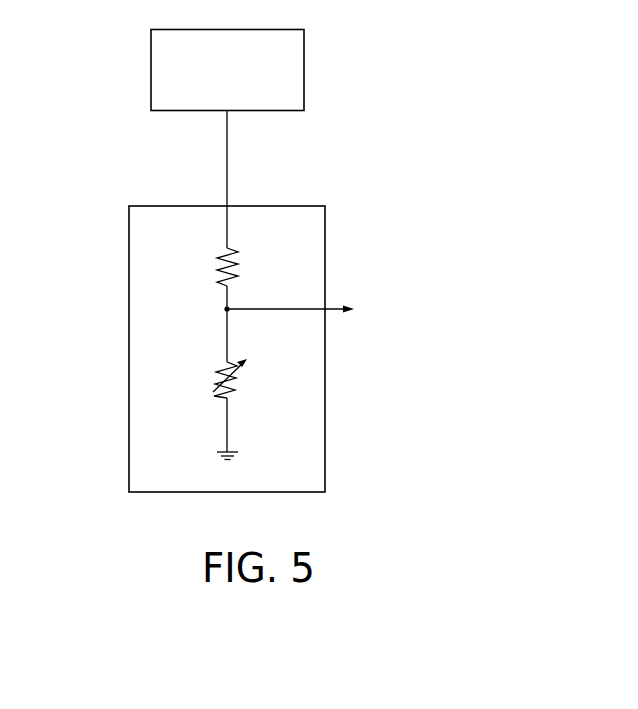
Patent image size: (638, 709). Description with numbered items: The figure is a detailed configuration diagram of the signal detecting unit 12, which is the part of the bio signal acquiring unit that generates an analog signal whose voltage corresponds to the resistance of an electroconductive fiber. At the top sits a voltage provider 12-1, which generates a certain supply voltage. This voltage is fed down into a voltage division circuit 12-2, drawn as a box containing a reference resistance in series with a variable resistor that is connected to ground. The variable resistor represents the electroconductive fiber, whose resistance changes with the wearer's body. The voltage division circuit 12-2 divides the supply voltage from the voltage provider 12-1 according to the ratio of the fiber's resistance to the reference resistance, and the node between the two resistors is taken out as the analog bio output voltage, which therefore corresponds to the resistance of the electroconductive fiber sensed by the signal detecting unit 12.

The signal detecting unit 12 is at (321, 261).
The voltage provider 12-1 is at (305, 69).
The voltage division circuit 12-2 is at (326, 373).